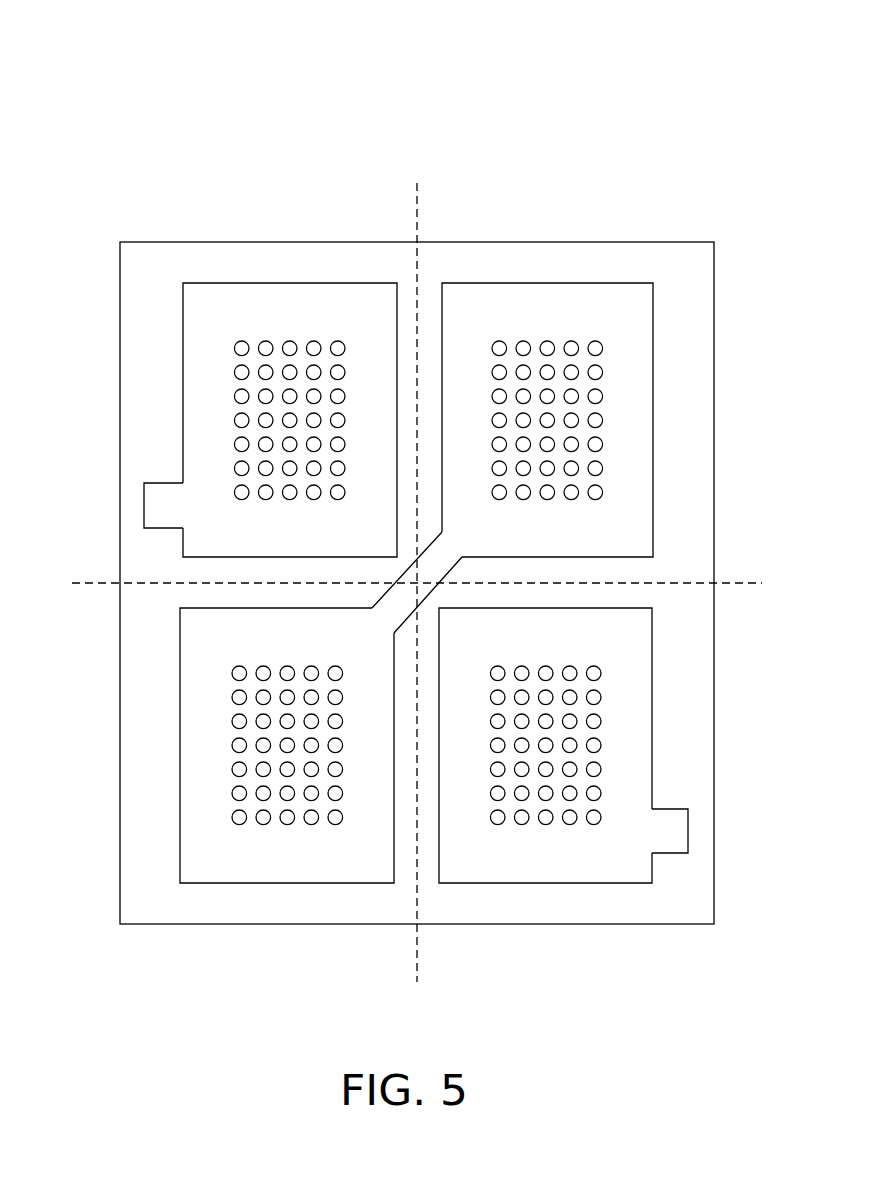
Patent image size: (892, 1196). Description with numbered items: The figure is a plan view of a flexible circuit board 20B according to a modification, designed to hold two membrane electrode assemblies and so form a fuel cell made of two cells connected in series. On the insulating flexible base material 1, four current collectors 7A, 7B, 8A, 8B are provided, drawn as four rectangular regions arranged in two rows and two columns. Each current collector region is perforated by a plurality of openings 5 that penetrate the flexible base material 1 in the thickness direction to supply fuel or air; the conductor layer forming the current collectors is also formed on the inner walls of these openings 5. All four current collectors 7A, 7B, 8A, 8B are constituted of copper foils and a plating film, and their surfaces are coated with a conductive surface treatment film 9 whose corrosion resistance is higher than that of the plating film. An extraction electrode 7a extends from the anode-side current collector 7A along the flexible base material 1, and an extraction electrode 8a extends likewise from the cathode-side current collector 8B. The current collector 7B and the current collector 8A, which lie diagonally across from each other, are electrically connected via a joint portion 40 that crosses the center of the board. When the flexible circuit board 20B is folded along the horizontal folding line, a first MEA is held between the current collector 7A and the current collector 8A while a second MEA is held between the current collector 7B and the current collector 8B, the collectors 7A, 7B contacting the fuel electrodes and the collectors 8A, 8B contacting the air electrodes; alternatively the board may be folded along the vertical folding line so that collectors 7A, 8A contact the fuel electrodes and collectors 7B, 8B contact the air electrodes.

The flexible circuit board 20B is at (712, 62).
The flexible base material 1 is at (698, 320).
The openings 5 is at (337, 347).
The current collector 7A is at (292, 283).
The current collector 7B is at (549, 283).
The extraction electrode 7a is at (155, 504).
The current collector 8A is at (289, 883).
The current collector 8B is at (544, 883).
The extraction electrode 8a is at (673, 830).
The surface treatment film 9 is at (380, 540).
The joint portion 40 is at (430, 595).